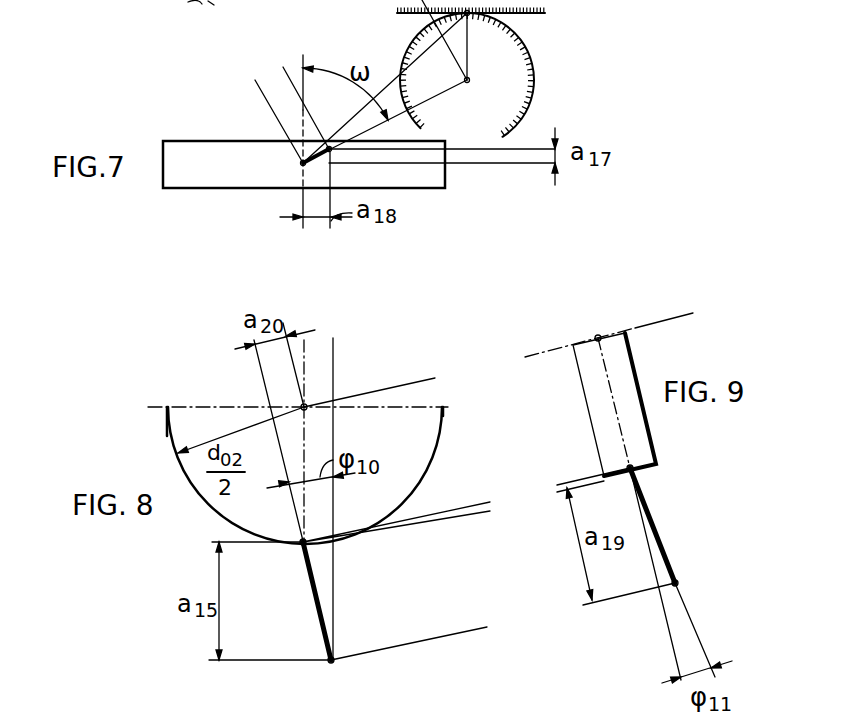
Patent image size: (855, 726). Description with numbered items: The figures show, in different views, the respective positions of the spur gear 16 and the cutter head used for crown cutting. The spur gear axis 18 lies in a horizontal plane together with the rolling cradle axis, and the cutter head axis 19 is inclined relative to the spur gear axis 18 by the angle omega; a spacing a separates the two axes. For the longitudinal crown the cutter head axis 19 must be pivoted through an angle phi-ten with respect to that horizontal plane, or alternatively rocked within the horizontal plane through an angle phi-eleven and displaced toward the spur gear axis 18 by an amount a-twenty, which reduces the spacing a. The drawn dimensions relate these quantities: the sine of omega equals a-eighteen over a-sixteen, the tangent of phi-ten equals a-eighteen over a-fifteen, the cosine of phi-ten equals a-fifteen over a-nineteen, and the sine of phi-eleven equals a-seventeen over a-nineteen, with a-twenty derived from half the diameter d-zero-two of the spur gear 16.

In FIG. 7, the spur gear 16 is at (187, 147).
In FIG. 8, the spur gear 16 is at (165, 425).
In FIG. 9, the spur gear 16 is at (605, 437).
In FIG. 7, the spur gear axis 18 is at (305, 58).
In FIG. 8, the spur gear axis 18 is at (307, 405).
In FIG. 9, the spur gear axis 18 is at (671, 313).
In FIG. 7, the cutter head axis 19 is at (466, 88).